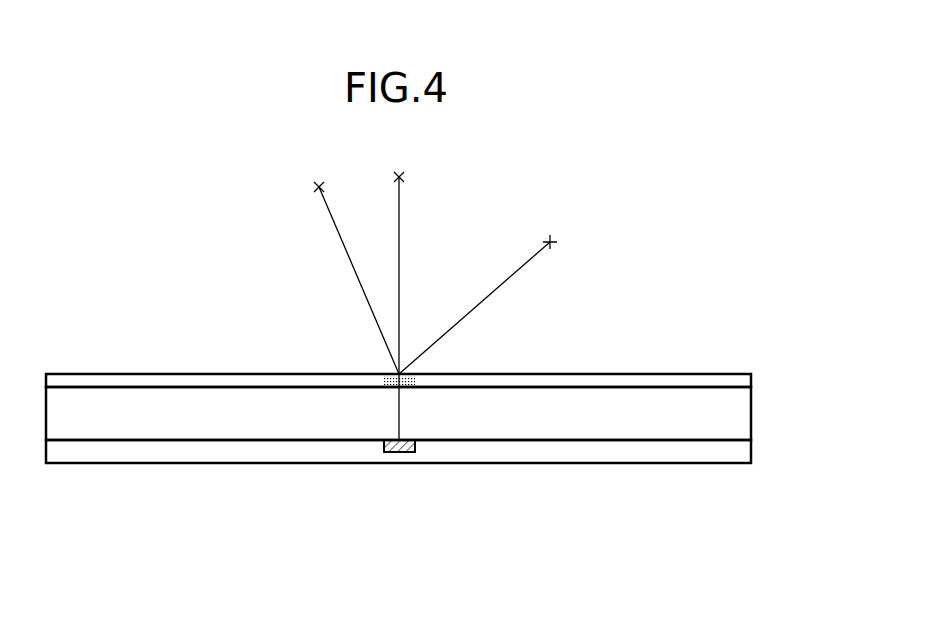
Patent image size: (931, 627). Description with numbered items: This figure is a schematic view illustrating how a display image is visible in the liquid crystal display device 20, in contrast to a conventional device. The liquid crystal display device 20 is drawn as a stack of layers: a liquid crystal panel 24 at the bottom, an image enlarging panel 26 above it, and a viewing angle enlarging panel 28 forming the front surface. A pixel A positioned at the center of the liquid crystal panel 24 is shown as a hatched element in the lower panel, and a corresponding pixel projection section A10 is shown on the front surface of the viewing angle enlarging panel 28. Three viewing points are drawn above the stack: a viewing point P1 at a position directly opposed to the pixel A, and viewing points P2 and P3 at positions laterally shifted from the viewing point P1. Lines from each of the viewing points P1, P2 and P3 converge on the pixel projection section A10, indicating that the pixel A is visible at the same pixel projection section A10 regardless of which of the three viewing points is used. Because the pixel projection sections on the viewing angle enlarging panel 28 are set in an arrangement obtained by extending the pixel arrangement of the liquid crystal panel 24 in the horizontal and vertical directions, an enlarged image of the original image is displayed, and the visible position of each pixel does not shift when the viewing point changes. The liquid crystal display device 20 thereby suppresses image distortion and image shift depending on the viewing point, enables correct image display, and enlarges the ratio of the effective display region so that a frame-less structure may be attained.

The liquid crystal display device 20 is at (431, 382).
The liquid crystal panel 24 is at (745, 449).
The image enlarging panel 26 is at (745, 412).
The viewing angle enlarging panel 28 is at (745, 378).
The pixel A is at (402, 452).
The pixel projection section A10 is at (392, 372).
The viewing point P1 is at (400, 291).
The viewing point P2 is at (481, 291).
The viewing point P3 is at (351, 261).